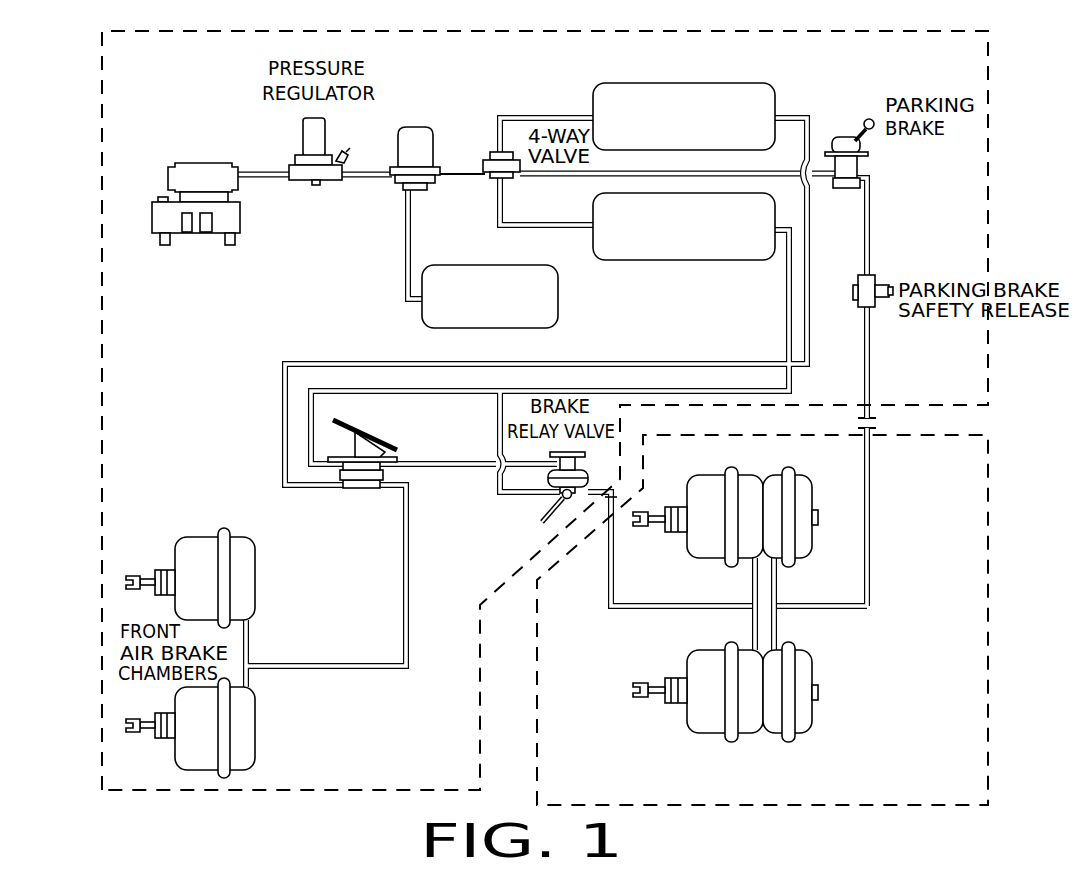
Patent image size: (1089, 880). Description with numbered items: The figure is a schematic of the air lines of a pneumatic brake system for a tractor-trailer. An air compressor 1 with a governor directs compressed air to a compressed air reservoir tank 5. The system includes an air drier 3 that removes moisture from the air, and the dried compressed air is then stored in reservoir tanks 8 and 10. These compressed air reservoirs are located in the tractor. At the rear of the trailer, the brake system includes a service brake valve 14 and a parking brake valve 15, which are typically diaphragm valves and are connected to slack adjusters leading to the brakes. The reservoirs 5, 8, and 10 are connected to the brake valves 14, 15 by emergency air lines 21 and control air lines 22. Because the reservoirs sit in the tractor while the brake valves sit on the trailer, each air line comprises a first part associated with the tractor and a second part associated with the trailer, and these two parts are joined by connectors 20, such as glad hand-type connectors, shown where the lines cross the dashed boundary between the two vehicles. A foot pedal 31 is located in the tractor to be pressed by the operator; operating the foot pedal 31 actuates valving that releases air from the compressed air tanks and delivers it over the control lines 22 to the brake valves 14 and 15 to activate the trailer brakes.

The air compressor 1 is at (240, 218).
The air drier 3 is at (418, 127).
The compressed air reservoir tank 5 is at (558, 290).
The reservoir tank 8 is at (765, 83).
The reservoir tank 10 is at (688, 260).
The service brake valve 14 is at (810, 535).
The parking brake valve 15 is at (703, 558).
The connectors 20 is at (612, 500).
The emergency air lines 21 is at (872, 503).
The control air lines 22 is at (608, 600).
The foot pedal 31 is at (352, 440).